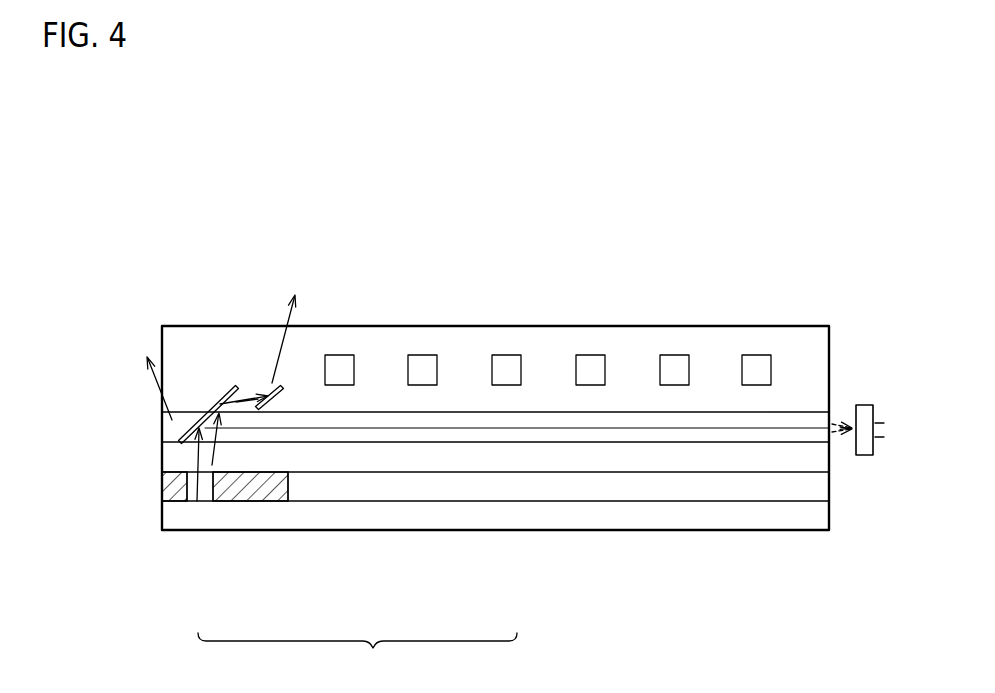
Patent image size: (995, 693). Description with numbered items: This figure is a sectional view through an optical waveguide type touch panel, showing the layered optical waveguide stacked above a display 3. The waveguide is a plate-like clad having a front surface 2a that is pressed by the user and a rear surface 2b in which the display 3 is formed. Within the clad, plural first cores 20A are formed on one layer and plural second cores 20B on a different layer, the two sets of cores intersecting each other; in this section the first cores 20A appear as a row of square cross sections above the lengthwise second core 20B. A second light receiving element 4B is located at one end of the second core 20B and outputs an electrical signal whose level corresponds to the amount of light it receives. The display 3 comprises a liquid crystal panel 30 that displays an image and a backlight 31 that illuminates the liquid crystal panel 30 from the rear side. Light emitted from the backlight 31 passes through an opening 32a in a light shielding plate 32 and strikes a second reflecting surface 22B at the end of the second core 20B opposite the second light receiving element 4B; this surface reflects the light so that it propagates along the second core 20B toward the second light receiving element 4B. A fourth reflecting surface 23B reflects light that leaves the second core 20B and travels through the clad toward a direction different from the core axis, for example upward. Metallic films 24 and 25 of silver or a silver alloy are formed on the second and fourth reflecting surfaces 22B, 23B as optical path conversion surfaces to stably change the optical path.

The front surface 2a is at (800, 327).
The rear surface 2b is at (802, 473).
The display 3 is at (357, 661).
The second light receiving element 4B is at (862, 407).
The first core 20A is at (426, 362).
The second core 20B is at (552, 419).
The second reflecting surface 22B is at (233, 387).
The fourth reflecting surface 23B is at (285, 386).
The metallic film 24 is at (187, 472).
The metallic film 25 is at (287, 398).
The liquid crystal panel 30 is at (485, 492).
The backlight 31 is at (450, 520).
The light shielding plate 32 is at (273, 501).
The opening 32a is at (197, 501).